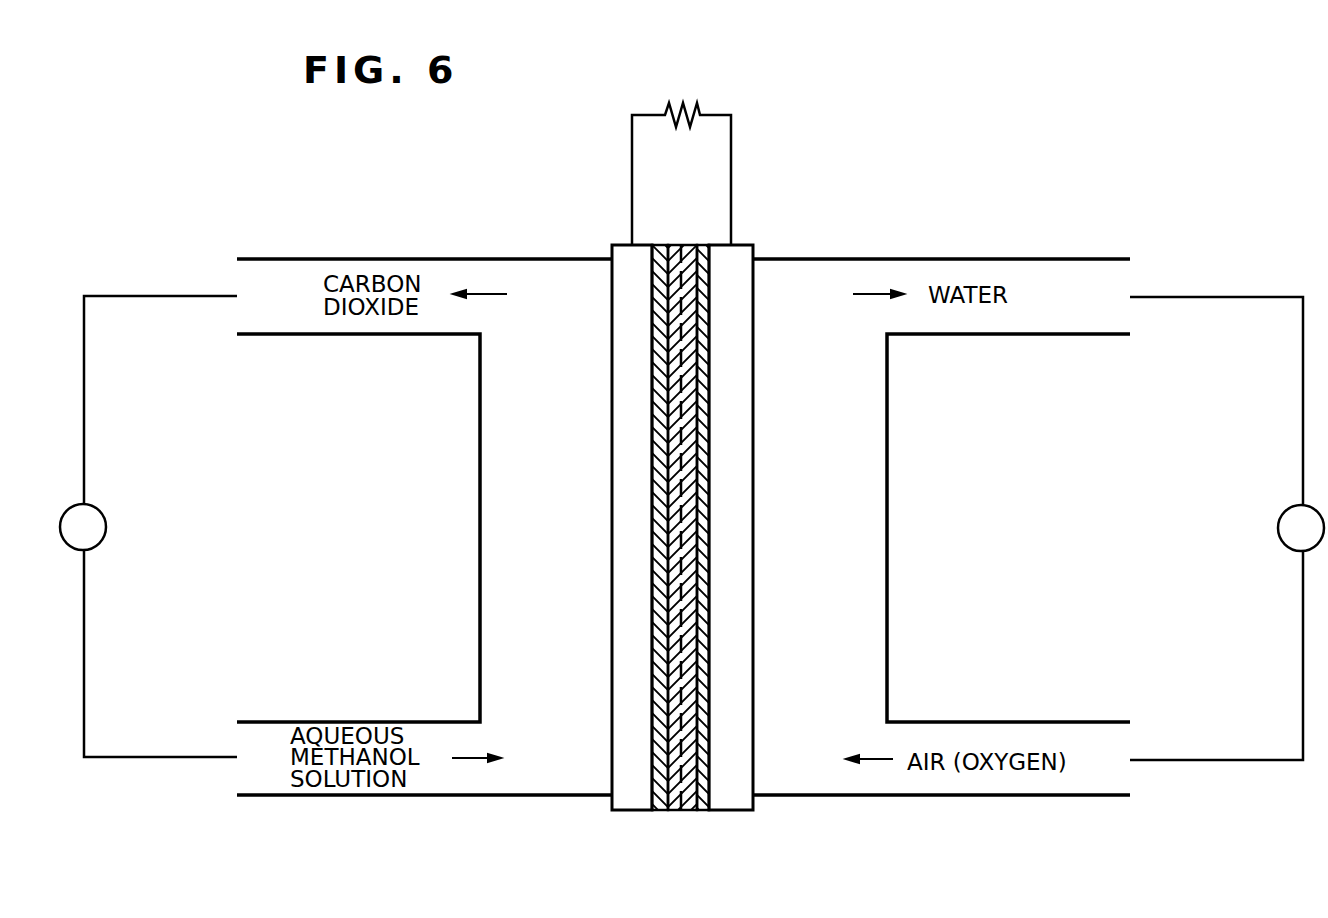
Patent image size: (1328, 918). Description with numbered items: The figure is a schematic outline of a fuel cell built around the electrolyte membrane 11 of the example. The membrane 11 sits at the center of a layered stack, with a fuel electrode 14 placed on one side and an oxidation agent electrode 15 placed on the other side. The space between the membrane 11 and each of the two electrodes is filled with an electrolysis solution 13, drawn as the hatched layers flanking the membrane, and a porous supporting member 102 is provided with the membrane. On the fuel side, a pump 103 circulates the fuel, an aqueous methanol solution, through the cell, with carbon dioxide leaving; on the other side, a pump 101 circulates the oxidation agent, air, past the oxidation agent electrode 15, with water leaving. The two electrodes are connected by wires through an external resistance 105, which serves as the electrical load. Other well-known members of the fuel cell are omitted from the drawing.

The electrolyte membrane 11 is at (667, 525).
The electrolysis solution 13 is at (659, 250).
The fuel electrode 14 is at (628, 795).
The oxidation agent electrode 15 is at (723, 500).
The pump 101 is at (1288, 509).
The porous supporting member 102 is at (677, 511).
The pump 103 is at (101, 509).
The external resistance 105 is at (700, 108).